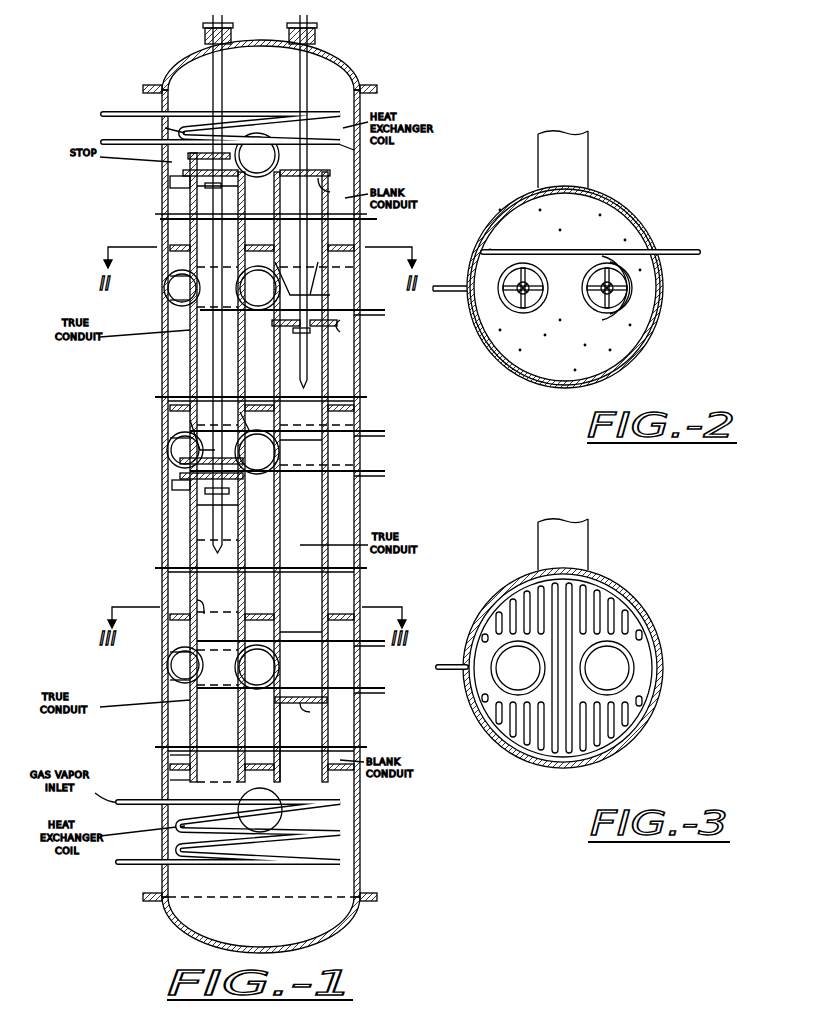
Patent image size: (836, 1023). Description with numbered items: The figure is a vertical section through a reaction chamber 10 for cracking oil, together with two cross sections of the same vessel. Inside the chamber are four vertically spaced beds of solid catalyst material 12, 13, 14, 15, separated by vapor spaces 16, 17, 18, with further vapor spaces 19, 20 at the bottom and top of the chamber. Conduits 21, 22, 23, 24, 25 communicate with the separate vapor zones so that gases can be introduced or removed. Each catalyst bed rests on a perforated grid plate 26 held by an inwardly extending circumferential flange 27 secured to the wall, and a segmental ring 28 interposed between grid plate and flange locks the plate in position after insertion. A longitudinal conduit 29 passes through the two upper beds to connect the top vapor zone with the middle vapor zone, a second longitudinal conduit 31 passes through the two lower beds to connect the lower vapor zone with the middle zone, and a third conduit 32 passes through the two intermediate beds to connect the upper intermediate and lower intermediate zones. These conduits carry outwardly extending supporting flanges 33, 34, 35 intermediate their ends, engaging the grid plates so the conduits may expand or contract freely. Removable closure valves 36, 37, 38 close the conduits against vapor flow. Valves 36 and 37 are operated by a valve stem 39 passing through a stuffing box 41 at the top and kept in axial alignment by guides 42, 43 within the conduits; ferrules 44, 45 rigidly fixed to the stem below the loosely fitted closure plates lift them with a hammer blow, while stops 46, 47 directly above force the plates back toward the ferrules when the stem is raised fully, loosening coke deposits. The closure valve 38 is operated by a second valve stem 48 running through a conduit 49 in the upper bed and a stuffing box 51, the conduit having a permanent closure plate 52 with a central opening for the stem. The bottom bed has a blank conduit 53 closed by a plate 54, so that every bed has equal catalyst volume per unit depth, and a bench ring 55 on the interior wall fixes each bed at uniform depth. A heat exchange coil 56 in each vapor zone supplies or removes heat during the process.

In FIG. 1, the reaction chamber 10 is at (362, 405).
In FIG. 2, the reaction chamber 10 is at (510, 374).
In FIG. 3, the reaction chamber 10 is at (640, 598).
In FIG. 1, the catalyst bed 12 is at (340, 736).
In FIG. 1, the catalyst bed 13 is at (340, 512).
In FIG. 1, the catalyst bed 14 is at (340, 372).
In FIG. 2, the catalyst bed 14 is at (640, 330).
In FIG. 1, the catalyst bed 15 is at (340, 240).
In FIG. 1, the vapor space 16 is at (340, 672).
In FIG. 1, the vapor space 17 is at (340, 435).
In FIG. 1, the vapor space 18 is at (335, 285).
In FIG. 1, the vapor space 19 is at (320, 882).
In FIG. 1, the vapor space 20 is at (345, 152).
In FIG. 1, the conduit 21 is at (343, 805).
In FIG. 1, the conduit 22 is at (280, 670).
In FIG. 3, the conduit 22 is at (588, 540).
In FIG. 1, the conduit 23 is at (280, 452).
In FIG. 1, the conduit 24 is at (258, 288).
In FIG. 2, the conduit 24 is at (588, 160).
In FIG. 1, the conduit 25 is at (263, 140).
In FIG. 1, the perforated grid plate 26 is at (172, 272).
In FIG. 3, the perforated grid plate 26 is at (642, 685).
In FIG. 1, the circumferential flange 27 is at (172, 280).
In FIG. 1, the segmental ring 28 is at (170, 298).
In FIG. 3, the segmental ring 28 is at (615, 735).
In FIG. 1, the longitudinal conduit 29 is at (190, 350).
In FIG. 1, the longitudinal conduit 31 is at (190, 553).
In FIG. 3, the longitudinal conduit 31 is at (512, 676).
In FIG. 1, the conduit 32 is at (300, 583).
In FIG. 3, the conduit 32 is at (625, 660).
In FIG. 1, the supporting flange 33 is at (185, 238).
In FIG. 1, the supporting flange 34 is at (200, 598).
In FIG. 1, the supporting flange 35 is at (358, 399).
In FIG. 1, the closure valve 36 is at (172, 183).
In FIG. 1, the closure valve 37 is at (172, 482).
In FIG. 1, the closure valve 38 is at (344, 325).
In FIG. 1, the valve stem 39 is at (213, 376).
In FIG. 2, the valve stem 39 is at (512, 300).
In FIG. 1, the stuffing box 41 is at (203, 26).
In FIG. 1, the guide 42 is at (236, 198).
In FIG. 1, the guide 43 is at (197, 508).
In FIG. 1, the ferrule 44 is at (257, 155).
In FIG. 1, the ferrule 45 is at (272, 323).
In FIG. 1, the stop 46 is at (180, 140).
In FIG. 1, the stop 47 is at (180, 461).
In FIG. 1, the valve stem 48 is at (300, 66).
In FIG. 2, the valve stem 48 is at (590, 300).
In FIG. 1, the conduit 49 is at (366, 219).
In FIG. 1, the stuffing box 51 is at (317, 26).
In FIG. 1, the closure plate 52 is at (322, 178).
In FIG. 1, the blank conduit 53 is at (301, 739).
In FIG. 1, the plate 54 is at (340, 710).
In FIG. 1, the bench ring 55 is at (340, 350).
In FIG. 1, the heat exchange coil 56 is at (343, 112).
In FIG. 2, the heat exchange coil 56 is at (690, 250).
In FIG. 3, the heat exchange coil 56 is at (452, 660).